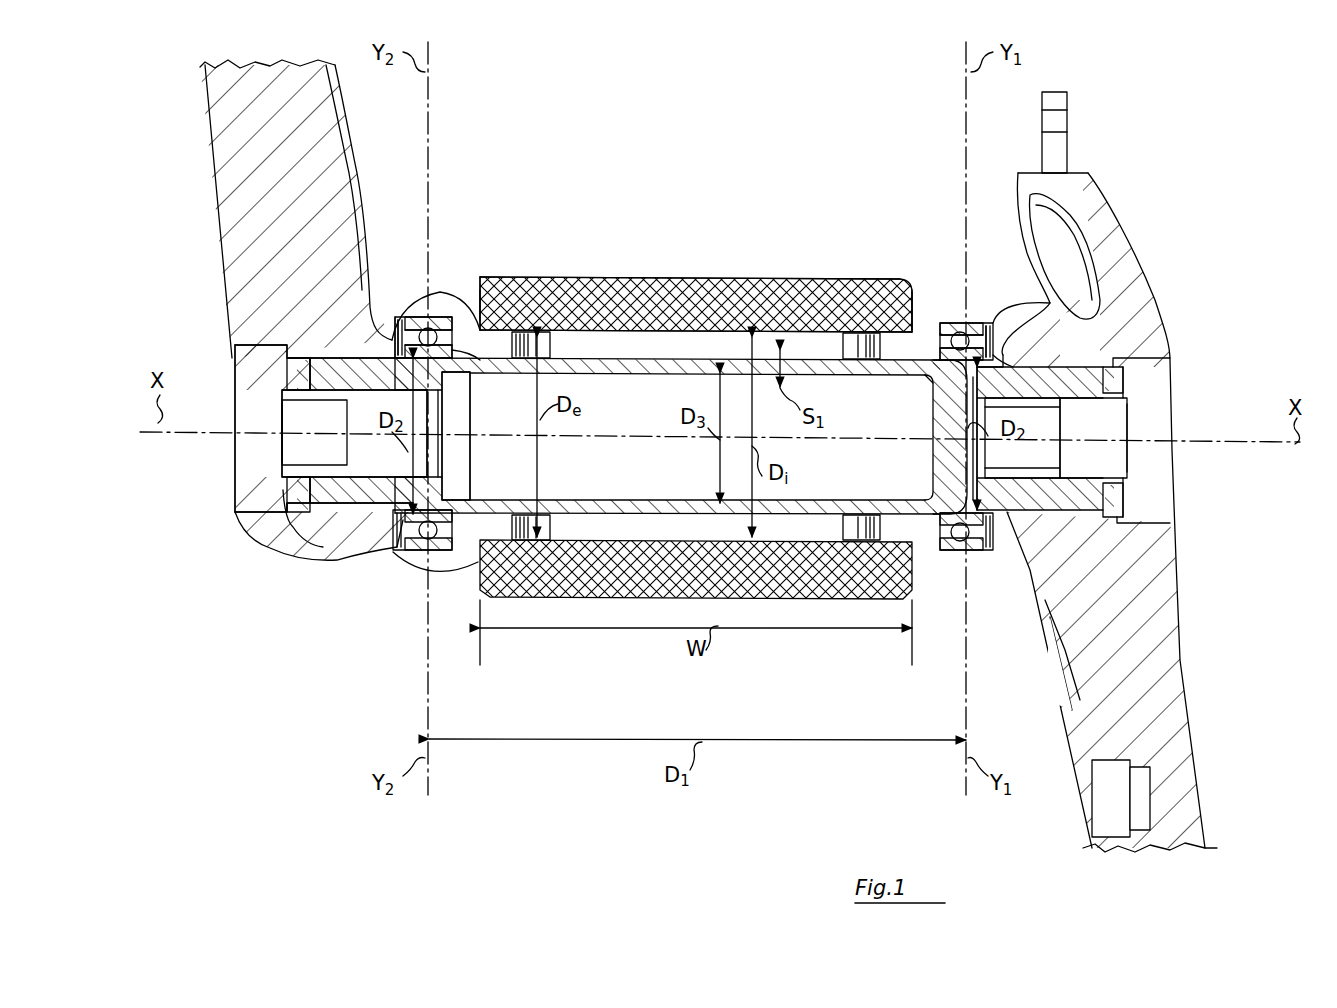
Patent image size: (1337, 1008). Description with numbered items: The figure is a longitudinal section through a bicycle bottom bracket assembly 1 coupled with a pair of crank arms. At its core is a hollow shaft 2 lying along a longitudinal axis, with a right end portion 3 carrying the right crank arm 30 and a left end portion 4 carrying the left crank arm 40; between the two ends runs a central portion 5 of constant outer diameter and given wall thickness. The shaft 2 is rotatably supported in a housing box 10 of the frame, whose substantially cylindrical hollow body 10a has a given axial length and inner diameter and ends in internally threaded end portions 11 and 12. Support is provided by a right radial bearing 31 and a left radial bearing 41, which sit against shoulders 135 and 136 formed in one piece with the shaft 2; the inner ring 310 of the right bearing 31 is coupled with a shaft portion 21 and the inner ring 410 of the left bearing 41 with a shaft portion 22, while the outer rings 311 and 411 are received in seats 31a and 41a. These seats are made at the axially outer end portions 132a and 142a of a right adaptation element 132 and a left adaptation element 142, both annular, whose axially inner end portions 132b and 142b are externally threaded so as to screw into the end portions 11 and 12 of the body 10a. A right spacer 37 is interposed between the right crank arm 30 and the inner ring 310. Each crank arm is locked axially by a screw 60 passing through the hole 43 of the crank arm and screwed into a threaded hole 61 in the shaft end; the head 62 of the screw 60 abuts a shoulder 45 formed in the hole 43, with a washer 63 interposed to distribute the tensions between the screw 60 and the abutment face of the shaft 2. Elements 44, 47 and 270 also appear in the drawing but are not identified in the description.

The bottom bracket assembly 1 is at (774, 188).
The shaft 2 is at (632, 365).
The right end portion 3 is at (1070, 360).
The left end portion 4 is at (318, 355).
The central portion 5 is at (660, 376).
The housing box 10 is at (745, 332).
The cylindrical hollow body 10a is at (681, 328).
The internally threaded end portion 11 is at (856, 278).
The internally threaded end portion 12 is at (520, 274).
The shaft portion 21 is at (950, 392).
The shaft portion 22 is at (458, 436).
The right crank arm 30 is at (1153, 644).
The right radial bearing 31 is at (960, 334).
The seat 31a is at (966, 554).
The right spacer 37 is at (1001, 357).
The left crank arm 40 is at (288, 147).
The left radial bearing 41 is at (433, 330).
The seat 41a is at (428, 550).
The hole 43 is at (338, 518).
The hub body 44 is at (360, 477).
The shoulder 45 is at (340, 500).
The arm shoulder 47 is at (399, 338).
The screw 60 is at (300, 439).
The threaded hole 61 is at (393, 474).
The head 62 is at (247, 362).
The washer 63 is at (315, 505).
The right adaptation element 132 is at (856, 328).
The axially outer end portion 132a is at (958, 324).
The axially inner end portion 132b is at (873, 298).
The shoulder 135 is at (933, 356).
The shoulder 136 is at (459, 352).
The left adaptation element 142 is at (440, 320).
The axially outer end portion 142a is at (408, 314).
The axially inner end portion 142b is at (518, 274).
The right spacer 270 is at (872, 366).
The inner ring 310 is at (918, 361).
The outer ring 311 is at (956, 332).
The inner ring 410 is at (465, 370).
The outer ring 411 is at (425, 317).